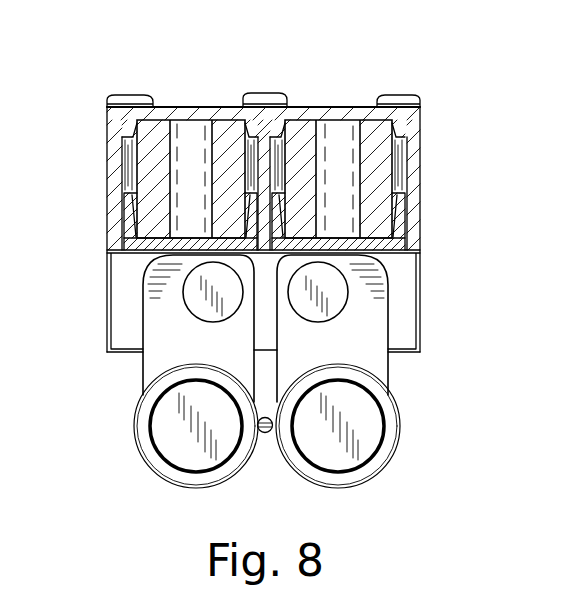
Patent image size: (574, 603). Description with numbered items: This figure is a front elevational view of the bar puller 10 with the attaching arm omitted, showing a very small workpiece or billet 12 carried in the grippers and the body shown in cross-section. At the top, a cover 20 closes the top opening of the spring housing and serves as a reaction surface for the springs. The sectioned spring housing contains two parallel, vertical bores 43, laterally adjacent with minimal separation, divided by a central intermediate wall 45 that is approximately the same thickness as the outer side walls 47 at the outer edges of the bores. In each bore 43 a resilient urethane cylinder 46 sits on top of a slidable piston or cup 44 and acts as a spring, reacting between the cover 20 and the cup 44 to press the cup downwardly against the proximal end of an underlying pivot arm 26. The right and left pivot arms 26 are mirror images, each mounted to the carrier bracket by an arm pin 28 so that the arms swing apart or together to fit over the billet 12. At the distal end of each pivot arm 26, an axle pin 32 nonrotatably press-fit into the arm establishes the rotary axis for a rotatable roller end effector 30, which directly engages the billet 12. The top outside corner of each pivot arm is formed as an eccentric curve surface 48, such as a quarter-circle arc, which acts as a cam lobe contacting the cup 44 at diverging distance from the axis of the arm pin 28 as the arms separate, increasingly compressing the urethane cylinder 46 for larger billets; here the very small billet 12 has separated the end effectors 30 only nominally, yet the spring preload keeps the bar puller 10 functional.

The bar puller 10 is at (98, 84).
The billet 12 is at (268, 433).
The cover 20 is at (213, 113).
The pivot arms 26 is at (172, 338).
The arm pin 28 is at (200, 279).
The roller 30 is at (133, 414).
The axle pin 32 is at (170, 447).
The bores 43 is at (130, 152).
The cup 44 is at (123, 240).
The intermediate wall 45 is at (266, 138).
The urethane cylinder 46 is at (127, 203).
The outer side walls 47 is at (418, 171).
The eccentric curve surface 48 is at (183, 263).